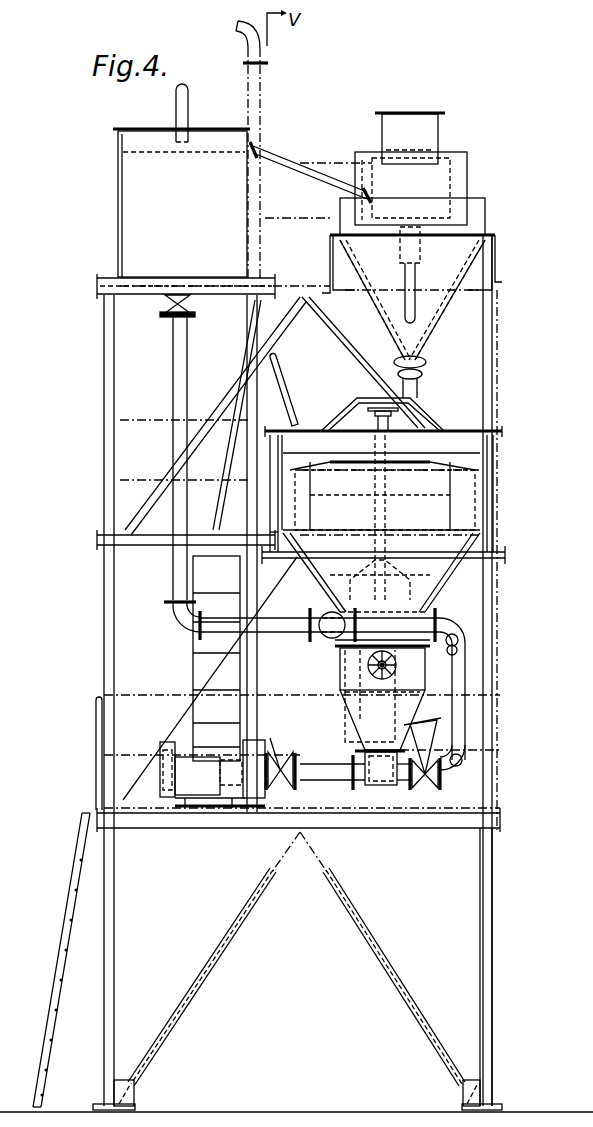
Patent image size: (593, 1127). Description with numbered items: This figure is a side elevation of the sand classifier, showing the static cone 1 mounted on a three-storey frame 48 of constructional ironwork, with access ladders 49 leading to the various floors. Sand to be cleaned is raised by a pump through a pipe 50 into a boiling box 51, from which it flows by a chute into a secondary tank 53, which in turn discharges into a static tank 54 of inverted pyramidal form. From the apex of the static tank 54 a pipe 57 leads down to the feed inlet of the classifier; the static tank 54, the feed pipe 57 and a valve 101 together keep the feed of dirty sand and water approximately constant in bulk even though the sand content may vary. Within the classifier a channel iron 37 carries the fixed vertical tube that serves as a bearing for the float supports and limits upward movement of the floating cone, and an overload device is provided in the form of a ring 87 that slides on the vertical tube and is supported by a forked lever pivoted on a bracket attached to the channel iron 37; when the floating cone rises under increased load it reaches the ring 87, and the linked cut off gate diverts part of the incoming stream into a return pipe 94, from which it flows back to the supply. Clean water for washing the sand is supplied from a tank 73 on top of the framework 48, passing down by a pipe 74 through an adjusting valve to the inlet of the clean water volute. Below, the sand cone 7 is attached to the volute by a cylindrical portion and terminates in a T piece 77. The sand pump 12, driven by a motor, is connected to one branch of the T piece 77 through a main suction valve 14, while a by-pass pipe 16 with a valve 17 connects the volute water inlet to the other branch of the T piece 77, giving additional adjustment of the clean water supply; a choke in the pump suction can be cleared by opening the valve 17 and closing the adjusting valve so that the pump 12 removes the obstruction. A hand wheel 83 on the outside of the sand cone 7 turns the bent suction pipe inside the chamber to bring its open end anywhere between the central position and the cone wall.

The static cone 1 is at (430, 592).
The sand cone 7 is at (405, 713).
The sand pump 12 is at (266, 790).
The main suction valve 14 is at (282, 749).
The by-pass pipe 16 is at (455, 676).
The valve 17 is at (425, 762).
The channel iron 37 is at (395, 425).
The frame 48 is at (106, 296).
The access ladders 49 is at (236, 455).
The pipe 50 is at (410, 218).
The boiling box 51 is at (426, 130).
The secondary tank 53 is at (458, 168).
The static tank 54 is at (412, 300).
The pipe 57 is at (418, 382).
The tank 73 is at (136, 201).
The pipe 74 is at (177, 386).
The T piece 77 is at (382, 777).
The hand wheel 83 is at (392, 665).
The ring 87 is at (349, 413).
The return pipe 94 is at (407, 306).
The valve 101 is at (397, 366).